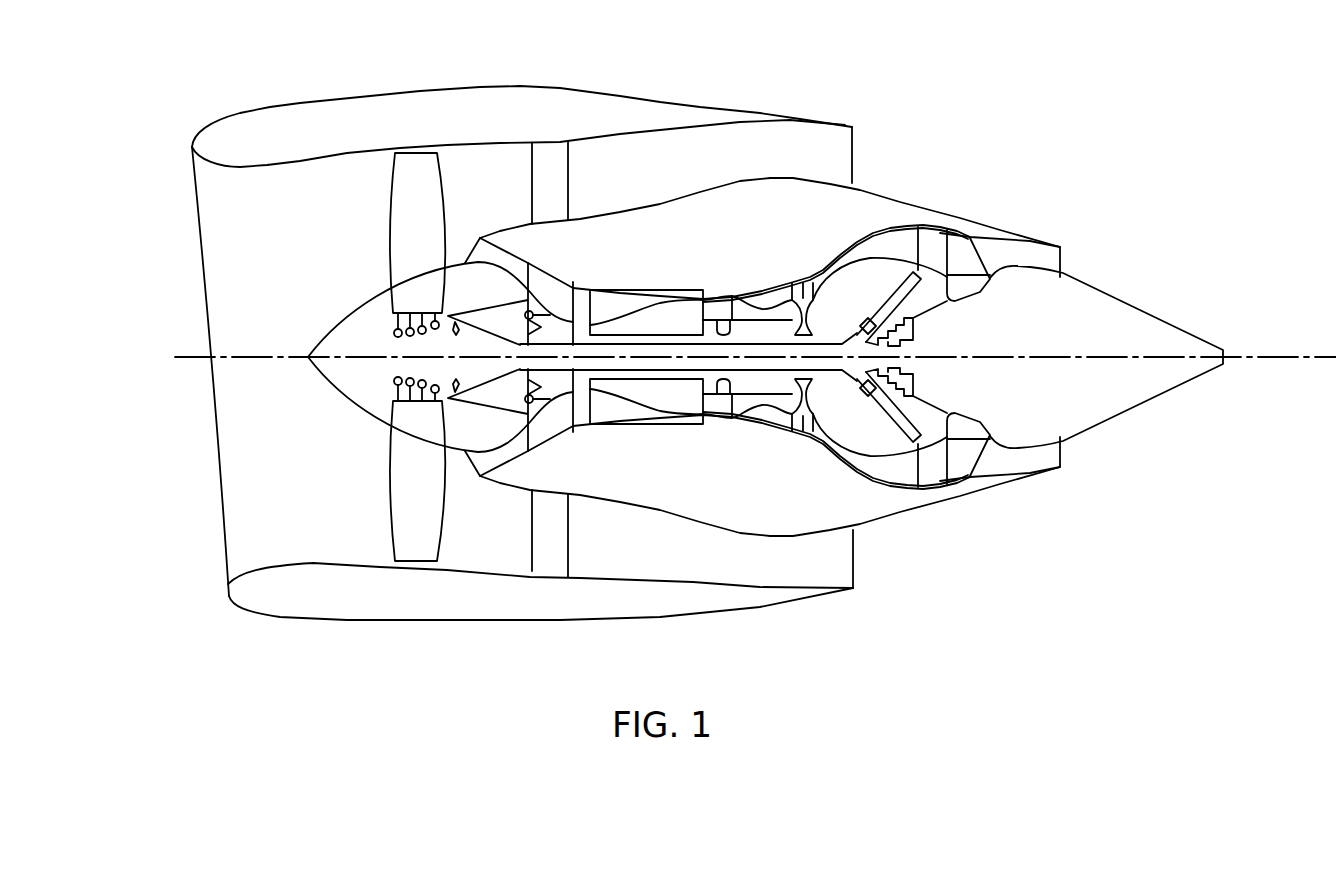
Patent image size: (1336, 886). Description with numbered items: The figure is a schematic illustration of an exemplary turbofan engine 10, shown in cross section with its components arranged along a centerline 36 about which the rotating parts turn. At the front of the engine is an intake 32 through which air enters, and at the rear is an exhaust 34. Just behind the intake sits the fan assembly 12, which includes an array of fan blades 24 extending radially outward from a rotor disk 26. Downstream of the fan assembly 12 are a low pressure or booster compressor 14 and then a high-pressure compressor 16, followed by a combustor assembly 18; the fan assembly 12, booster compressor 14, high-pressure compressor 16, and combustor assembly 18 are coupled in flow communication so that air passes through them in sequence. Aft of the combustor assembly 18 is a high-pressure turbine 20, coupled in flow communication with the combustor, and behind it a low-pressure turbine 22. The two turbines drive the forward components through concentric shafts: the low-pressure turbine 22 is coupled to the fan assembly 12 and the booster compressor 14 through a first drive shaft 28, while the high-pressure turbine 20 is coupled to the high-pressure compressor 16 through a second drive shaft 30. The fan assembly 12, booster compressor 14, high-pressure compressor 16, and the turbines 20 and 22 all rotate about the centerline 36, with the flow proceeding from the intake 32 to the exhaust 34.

The turbofan engine 10 is at (699, 324).
The fan assembly 12 is at (366, 210).
The booster compressor 14 is at (486, 210).
The high-pressure compressor 16 is at (645, 271).
The combustor assembly 18 is at (755, 260).
The high-pressure turbine 20 is at (812, 247).
The low-pressure turbine 22 is at (898, 209).
The fan blades 24 is at (428, 247).
The rotor disk 26 is at (378, 347).
The first drive shaft 28 is at (574, 284).
The second drive shaft 30 is at (731, 318).
The intake 32 is at (141, 188).
The exhaust 34 is at (1096, 254).
The centerline 36 is at (1276, 357).